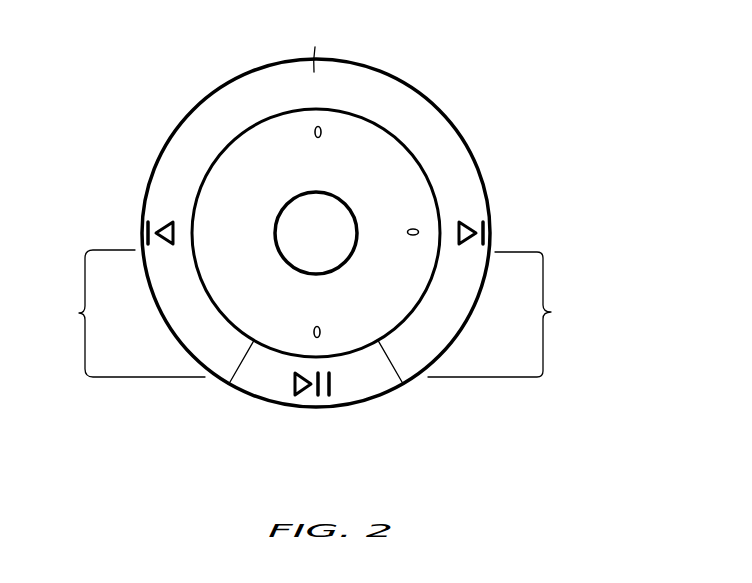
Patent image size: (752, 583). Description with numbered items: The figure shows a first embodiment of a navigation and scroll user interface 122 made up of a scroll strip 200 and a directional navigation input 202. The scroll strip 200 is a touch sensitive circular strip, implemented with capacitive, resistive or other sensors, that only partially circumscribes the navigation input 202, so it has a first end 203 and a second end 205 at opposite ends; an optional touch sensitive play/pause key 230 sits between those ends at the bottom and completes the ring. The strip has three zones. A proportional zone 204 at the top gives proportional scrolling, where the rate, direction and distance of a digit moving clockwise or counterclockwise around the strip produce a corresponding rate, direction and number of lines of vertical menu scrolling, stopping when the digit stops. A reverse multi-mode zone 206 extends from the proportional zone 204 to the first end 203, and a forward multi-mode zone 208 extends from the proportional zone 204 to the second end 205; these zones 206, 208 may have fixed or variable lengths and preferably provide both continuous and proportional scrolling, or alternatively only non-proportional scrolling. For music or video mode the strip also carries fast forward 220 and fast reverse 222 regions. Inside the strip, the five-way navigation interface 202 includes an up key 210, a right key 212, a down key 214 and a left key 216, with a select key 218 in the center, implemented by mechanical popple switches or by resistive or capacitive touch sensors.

The navigation and scroll user interface 122 is at (620, 55).
The scroll strip 200 is at (186, 100).
The directional navigation input 202 is at (441, 175).
The first end 203 is at (229, 377).
The proportional zone 204 is at (315, 50).
The second end 205 is at (397, 375).
The reverse multi-mode zone 206 is at (122, 313).
The forward multi-mode zone 208 is at (509, 314).
The up key 210 is at (319, 125).
The right key 212 is at (418, 226).
The down key 214 is at (320, 338).
The left key 216 is at (243, 190).
The select key 218 is at (330, 208).
The fast forward 220 is at (472, 222).
The fast reverse 222 is at (154, 216).
The play/pause key 230 is at (317, 398).